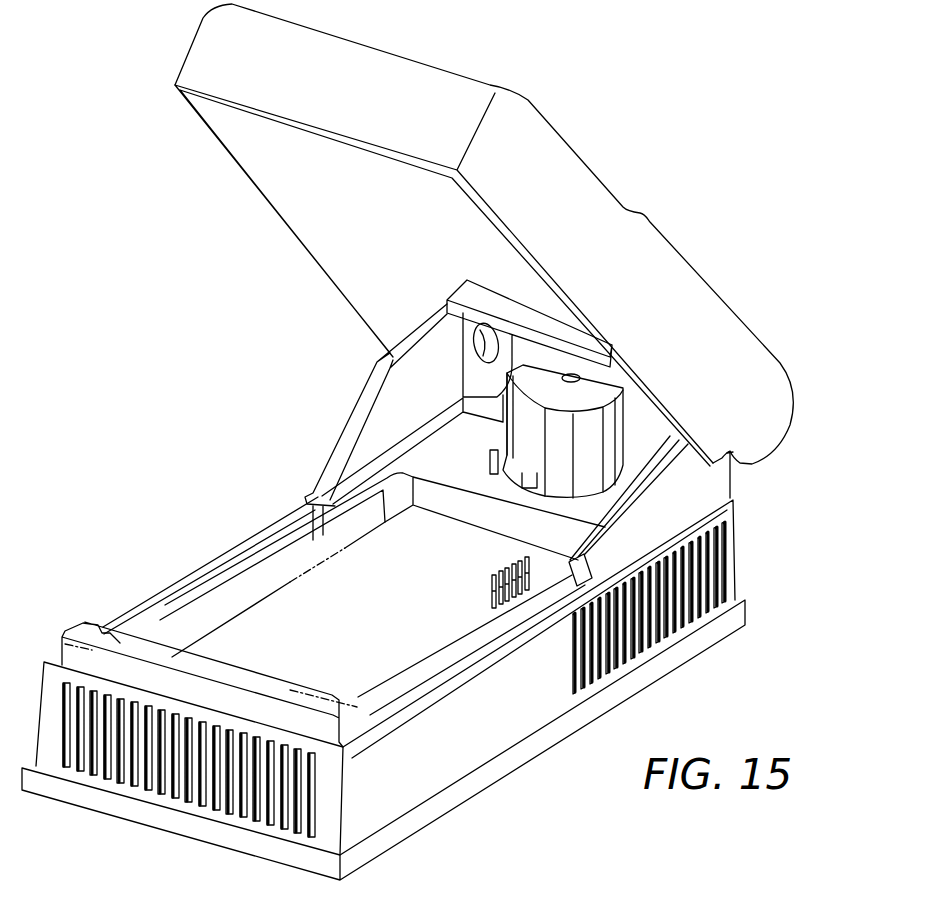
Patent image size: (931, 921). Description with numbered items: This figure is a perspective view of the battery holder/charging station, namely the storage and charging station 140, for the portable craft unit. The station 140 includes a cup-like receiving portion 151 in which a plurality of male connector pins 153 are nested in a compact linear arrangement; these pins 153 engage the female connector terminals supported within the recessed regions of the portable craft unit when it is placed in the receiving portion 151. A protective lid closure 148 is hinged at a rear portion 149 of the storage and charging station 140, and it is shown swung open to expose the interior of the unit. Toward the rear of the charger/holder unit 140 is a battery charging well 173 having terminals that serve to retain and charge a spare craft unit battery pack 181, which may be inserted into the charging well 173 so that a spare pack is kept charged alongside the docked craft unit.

The storage and charging station 140 is at (741, 584).
The protective lid closure 148 is at (570, 160).
The rear portion 149 is at (733, 480).
The cup-like receiving portion 151 is at (270, 617).
The male connector pins 153 is at (493, 588).
The battery charging well 173 is at (493, 460).
The spare craft unit battery pack 181 is at (508, 442).